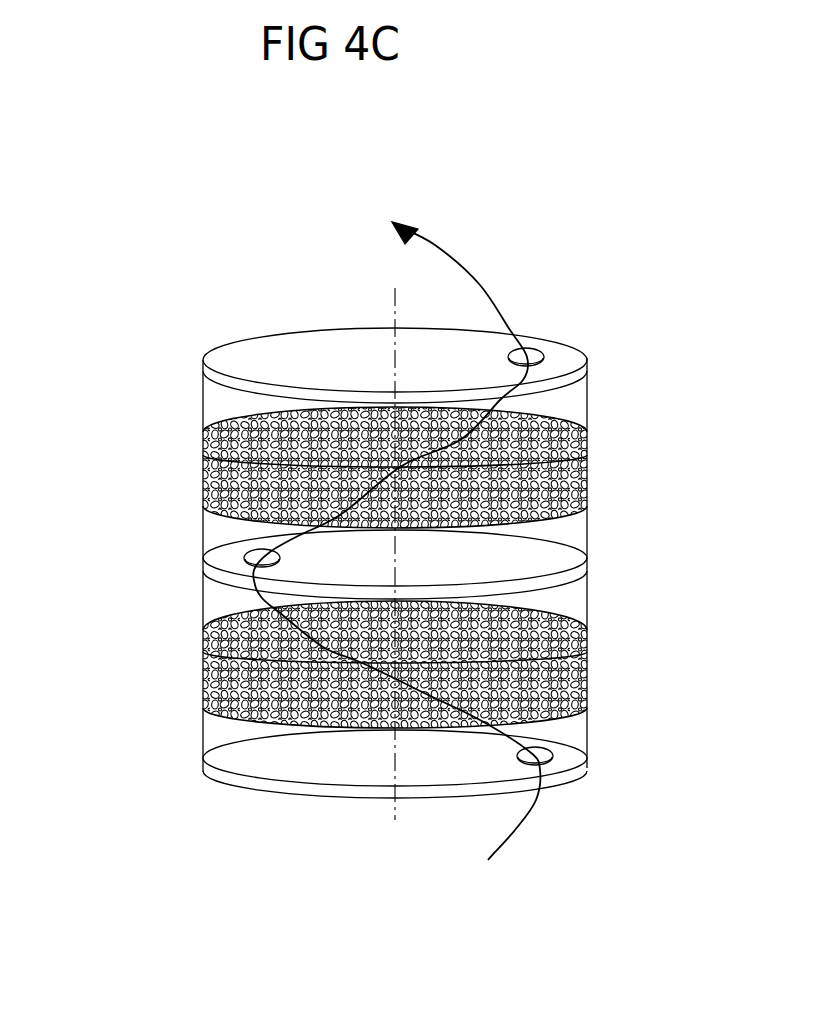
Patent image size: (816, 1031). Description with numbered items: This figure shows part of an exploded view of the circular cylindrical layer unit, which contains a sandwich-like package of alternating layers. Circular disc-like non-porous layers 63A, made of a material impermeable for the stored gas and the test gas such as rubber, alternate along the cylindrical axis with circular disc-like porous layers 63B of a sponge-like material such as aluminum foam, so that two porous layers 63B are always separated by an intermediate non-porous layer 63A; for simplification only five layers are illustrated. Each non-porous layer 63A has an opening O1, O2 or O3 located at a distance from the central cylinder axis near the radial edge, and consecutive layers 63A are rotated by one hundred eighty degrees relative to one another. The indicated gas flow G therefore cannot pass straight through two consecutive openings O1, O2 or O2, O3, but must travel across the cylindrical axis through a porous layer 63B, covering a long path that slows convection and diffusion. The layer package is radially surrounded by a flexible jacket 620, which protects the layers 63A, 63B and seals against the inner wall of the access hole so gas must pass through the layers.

The flexible jacket 620 is at (203, 417).
The non-porous layer 63A is at (250, 357).
The porous layer 63B is at (587, 475).
The opening O1 is at (543, 355).
The opening O2 is at (245, 553).
The opening O3 is at (522, 758).
The gas flow G is at (497, 300).